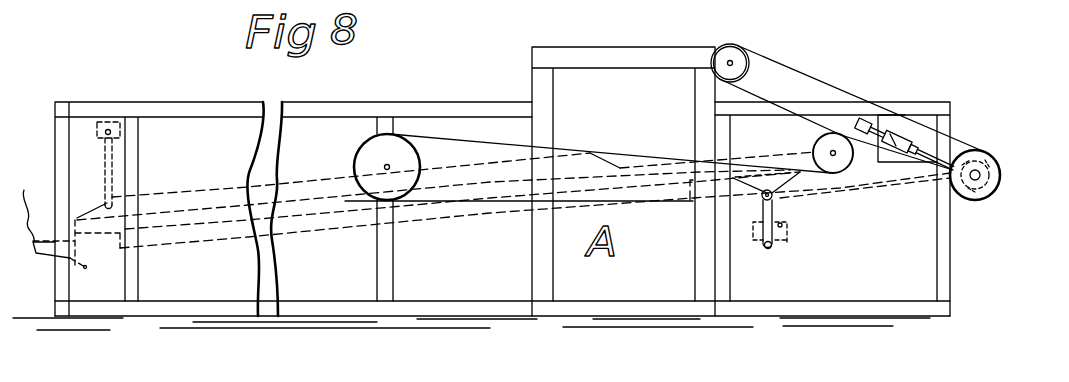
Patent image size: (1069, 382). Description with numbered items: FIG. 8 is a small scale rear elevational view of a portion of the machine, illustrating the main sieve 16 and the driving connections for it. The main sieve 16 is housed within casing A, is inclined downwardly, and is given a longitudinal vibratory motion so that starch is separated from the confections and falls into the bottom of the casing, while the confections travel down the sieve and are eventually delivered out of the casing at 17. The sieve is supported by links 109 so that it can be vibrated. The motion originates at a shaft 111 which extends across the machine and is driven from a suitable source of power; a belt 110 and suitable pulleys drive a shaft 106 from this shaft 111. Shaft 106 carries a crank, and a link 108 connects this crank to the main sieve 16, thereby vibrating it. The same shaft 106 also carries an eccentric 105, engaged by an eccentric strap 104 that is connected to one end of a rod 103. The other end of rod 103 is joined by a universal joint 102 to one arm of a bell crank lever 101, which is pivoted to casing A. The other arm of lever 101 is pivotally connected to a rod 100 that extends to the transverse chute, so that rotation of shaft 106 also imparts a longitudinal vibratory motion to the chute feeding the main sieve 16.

The main sieve 16 is at (462, 192).
The delivery point 17 is at (36, 168).
The rod 100 is at (855, 120).
The bell crank lever 101 is at (880, 128).
The universal joint 102 is at (900, 118).
The rod 103 is at (932, 152).
The eccentric strap 104 is at (978, 152).
The eccentric 105 is at (1000, 165).
The shaft 106 is at (985, 200).
The link 108 is at (880, 188).
The links 109 is at (112, 170).
The belt 110 is at (807, 72).
The shaft 111 is at (749, 44).